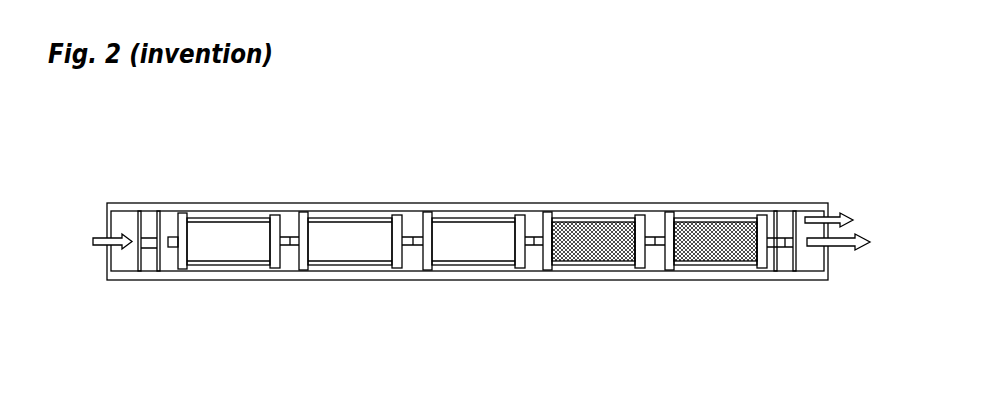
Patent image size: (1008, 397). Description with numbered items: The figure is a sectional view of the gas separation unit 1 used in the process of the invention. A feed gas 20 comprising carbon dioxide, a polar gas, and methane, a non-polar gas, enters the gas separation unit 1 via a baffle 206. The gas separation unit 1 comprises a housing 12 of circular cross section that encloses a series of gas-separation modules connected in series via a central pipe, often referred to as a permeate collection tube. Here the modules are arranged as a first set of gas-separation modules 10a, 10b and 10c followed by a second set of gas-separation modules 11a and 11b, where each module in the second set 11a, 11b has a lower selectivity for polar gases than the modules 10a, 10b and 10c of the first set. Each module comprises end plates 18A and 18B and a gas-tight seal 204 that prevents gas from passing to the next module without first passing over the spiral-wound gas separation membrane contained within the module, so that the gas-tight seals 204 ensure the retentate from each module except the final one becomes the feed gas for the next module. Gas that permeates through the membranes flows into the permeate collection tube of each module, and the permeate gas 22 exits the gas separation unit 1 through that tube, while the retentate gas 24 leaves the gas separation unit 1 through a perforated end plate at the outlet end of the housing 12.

The gas separation unit 1 is at (544, 141).
The gas-separation module 10a is at (245, 226).
The gas-separation module 10b is at (356, 221).
The gas-separation module 10c is at (476, 221).
The gas-separation module 11a is at (598, 218).
The gas-separation module 11b is at (721, 218).
The housing 12 is at (219, 204).
The end plate 18A is at (299, 249).
The end plate 18B is at (398, 266).
The feed gas 20 is at (103, 208).
The permeate gas 22 is at (850, 253).
The retentate gas 24 is at (834, 211).
The gas-tight seal 204 is at (304, 212).
The baffle 206 is at (151, 264).